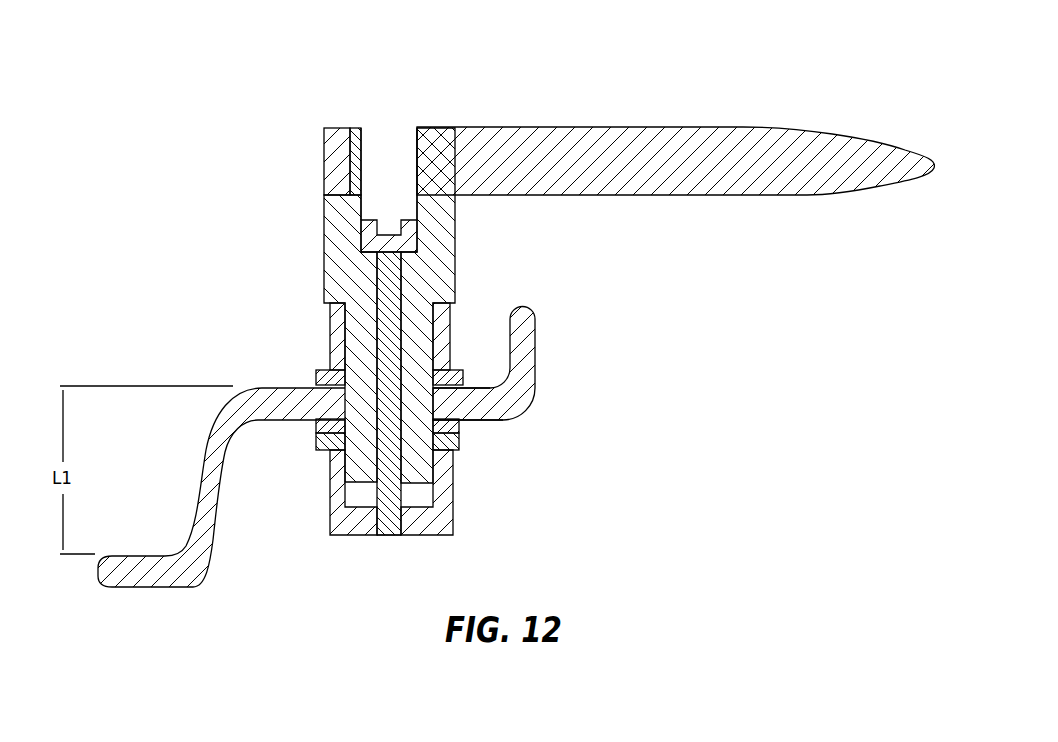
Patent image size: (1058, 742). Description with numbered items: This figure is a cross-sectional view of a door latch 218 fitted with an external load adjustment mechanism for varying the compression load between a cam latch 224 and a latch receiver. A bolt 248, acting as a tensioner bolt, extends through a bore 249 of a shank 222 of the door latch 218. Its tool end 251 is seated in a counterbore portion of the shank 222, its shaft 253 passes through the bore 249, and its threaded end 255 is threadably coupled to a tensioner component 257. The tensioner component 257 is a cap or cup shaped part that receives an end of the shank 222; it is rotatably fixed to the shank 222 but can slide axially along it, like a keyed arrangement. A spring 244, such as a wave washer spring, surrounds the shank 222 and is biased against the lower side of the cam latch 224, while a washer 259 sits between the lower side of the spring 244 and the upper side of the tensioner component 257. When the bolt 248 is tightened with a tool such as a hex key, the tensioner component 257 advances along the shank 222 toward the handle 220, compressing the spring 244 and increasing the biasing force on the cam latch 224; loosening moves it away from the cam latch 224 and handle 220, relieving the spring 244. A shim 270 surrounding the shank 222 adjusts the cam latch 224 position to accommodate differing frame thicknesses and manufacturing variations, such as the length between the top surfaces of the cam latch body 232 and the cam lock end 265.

The door latch 218 is at (331, 70).
The tool end 251 is at (385, 163).
The handle 220 is at (628, 195).
The bolt 248 is at (382, 238).
The shank 222 is at (335, 285).
The shaft 253 is at (407, 278).
The bore 249 is at (378, 323).
The threaded end 255 is at (396, 536).
The shim 270 is at (316, 380).
The cam latch 224 is at (212, 433).
The cam lock end 265 is at (103, 570).
The cam latch body 232 is at (525, 403).
The spring 244 is at (458, 433).
The washer 259 is at (317, 452).
The tensioner component 257 is at (448, 494).